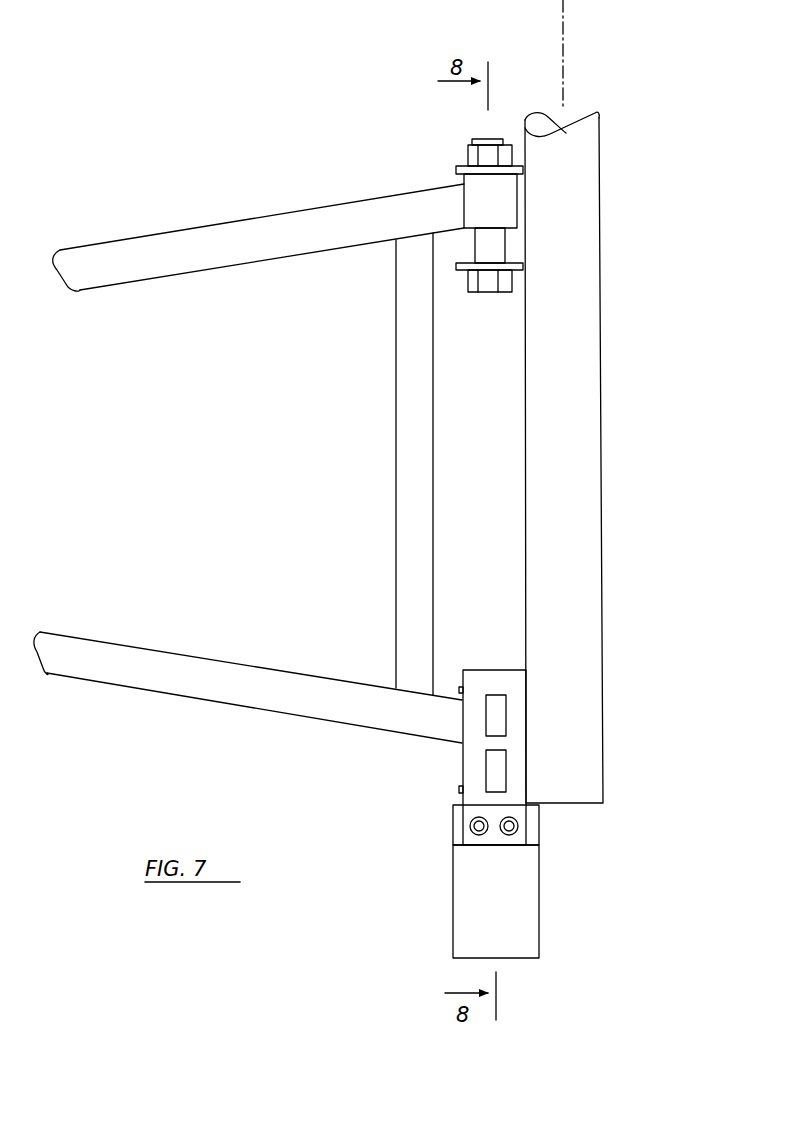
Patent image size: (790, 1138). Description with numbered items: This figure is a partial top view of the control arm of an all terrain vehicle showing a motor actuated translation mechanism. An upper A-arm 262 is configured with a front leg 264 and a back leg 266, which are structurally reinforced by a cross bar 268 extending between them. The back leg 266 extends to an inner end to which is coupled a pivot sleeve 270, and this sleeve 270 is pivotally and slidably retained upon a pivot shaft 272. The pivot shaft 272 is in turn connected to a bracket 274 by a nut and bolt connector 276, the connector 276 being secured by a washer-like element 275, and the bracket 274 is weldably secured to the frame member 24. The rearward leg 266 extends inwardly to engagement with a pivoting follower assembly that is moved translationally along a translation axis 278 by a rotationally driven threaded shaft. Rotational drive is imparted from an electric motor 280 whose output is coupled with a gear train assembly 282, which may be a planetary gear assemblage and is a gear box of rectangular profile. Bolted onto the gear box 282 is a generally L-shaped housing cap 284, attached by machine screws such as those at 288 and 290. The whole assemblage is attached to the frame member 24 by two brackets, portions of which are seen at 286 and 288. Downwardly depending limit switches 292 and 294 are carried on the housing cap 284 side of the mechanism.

The frame member 24 is at (580, 376).
The upper A-arm 262 is at (222, 292).
The front leg 264 is at (253, 228).
The back leg 266 is at (237, 690).
The cross bar 268 is at (407, 404).
The pivot sleeve 270 is at (471, 193).
The pivot shaft 272 is at (487, 240).
The bracket 274 is at (460, 272).
The washer plate 275 is at (460, 170).
The nut and bolt connector 276 is at (472, 150).
The translation axis 278 is at (563, 22).
The electric motor 280 is at (465, 910).
The gear train assembly 282 is at (538, 826).
The housing cap 284 is at (499, 668).
The bracket 286 is at (460, 786).
The bracket 288 is at (460, 690).
The machine screw 290 is at (470, 820).
The limit switch 292 is at (497, 768).
The limit switch 294 is at (497, 713).